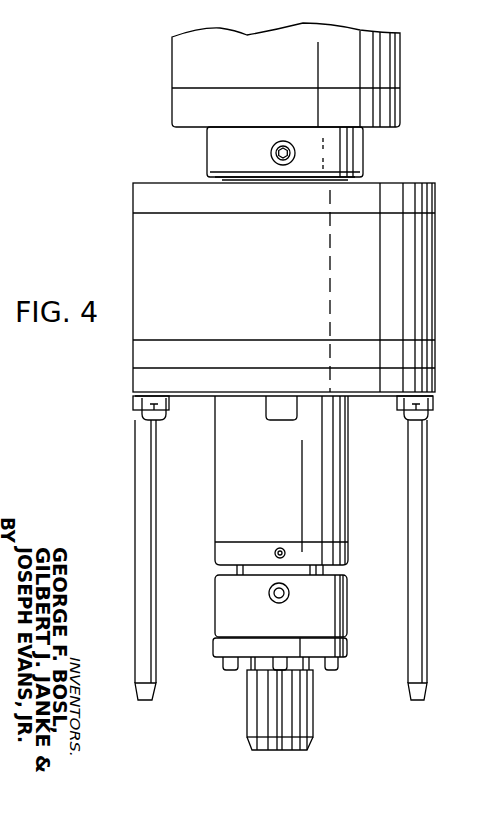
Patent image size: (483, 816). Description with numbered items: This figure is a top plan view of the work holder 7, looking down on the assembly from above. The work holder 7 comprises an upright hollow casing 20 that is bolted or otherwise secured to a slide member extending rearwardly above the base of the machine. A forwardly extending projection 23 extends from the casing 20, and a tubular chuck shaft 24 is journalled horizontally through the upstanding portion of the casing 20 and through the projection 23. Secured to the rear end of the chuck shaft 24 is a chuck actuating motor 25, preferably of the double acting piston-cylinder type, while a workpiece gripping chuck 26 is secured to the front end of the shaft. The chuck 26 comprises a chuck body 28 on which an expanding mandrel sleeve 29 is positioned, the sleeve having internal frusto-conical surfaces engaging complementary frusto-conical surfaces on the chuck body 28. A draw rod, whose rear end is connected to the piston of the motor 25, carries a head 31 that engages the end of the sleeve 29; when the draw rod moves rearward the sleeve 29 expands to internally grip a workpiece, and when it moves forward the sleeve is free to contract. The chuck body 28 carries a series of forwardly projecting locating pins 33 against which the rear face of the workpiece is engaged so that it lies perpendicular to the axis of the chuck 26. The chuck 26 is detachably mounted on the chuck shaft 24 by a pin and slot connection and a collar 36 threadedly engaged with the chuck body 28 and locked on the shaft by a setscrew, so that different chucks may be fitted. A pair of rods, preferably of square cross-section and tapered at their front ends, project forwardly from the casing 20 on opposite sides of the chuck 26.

The work holder 7 is at (304, 289).
The upright hollow casing 20 is at (422, 243).
The forwardly extending projection 23 is at (345, 499).
The tubular chuck shaft 24 is at (298, 572).
The chuck actuating motor 25 is at (407, 70).
The workpiece gripping chuck 26 is at (276, 728).
The chuck body 28 is at (348, 648).
The expanding mandrel sleeve 29 is at (314, 720).
The head 31 is at (281, 752).
The locating pins 33 is at (280, 660).
The collar 36 is at (346, 610).